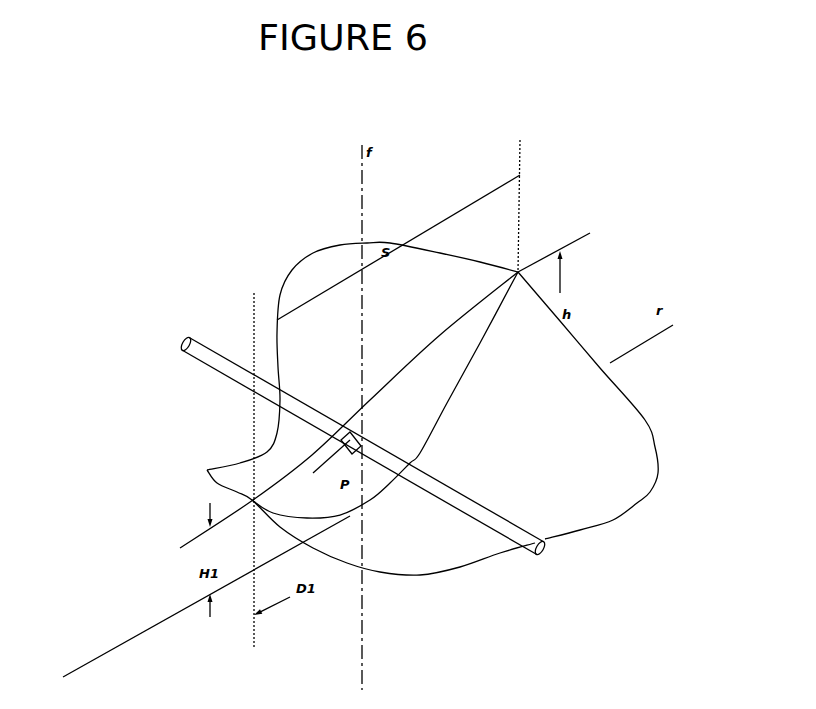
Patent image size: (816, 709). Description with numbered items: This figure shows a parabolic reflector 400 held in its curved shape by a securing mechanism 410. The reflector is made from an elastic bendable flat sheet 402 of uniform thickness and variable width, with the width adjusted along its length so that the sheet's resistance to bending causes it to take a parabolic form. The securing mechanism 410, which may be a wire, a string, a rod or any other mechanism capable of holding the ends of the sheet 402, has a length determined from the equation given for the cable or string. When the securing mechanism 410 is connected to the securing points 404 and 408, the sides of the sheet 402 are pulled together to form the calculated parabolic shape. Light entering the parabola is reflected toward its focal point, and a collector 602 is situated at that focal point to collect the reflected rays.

The parabolic reflector 400 is at (402, 354).
The elastic bendable flat sheet 402 is at (287, 268).
The securing point 404 is at (233, 505).
The focal point of the parabola / securing point 408 is at (532, 255).
The securing mechanism 410 is at (292, 449).
The collector 602 is at (171, 334).